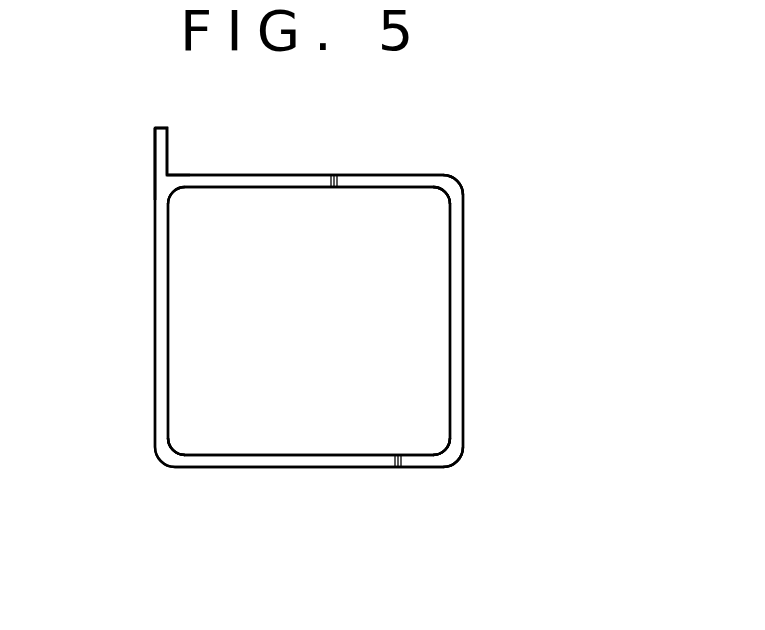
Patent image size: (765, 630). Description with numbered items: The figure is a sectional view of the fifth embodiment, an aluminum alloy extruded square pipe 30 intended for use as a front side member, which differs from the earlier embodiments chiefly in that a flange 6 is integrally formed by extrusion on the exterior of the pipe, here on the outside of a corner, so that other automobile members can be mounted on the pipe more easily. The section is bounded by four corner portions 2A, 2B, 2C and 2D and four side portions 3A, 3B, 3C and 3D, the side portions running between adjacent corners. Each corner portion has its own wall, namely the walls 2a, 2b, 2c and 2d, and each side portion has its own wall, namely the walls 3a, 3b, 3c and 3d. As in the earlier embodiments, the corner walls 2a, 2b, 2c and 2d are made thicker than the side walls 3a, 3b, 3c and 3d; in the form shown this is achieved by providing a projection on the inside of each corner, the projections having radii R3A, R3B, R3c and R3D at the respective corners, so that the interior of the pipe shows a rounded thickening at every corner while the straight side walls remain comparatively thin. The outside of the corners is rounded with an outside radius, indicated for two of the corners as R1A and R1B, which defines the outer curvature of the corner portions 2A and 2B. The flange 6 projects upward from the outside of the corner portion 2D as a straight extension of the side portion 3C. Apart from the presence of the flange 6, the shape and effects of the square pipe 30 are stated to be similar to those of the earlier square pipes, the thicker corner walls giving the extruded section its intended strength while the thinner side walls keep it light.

The square pipe 30 is at (534, 255).
The flange 6 is at (168, 150).
The corner portion 2D is at (146, 170).
The wall of corner portion 2d is at (172, 193).
The radius of projection R3D is at (185, 200).
The side portion 3D is at (284, 175).
The wall of side portion 3d is at (354, 187).
The outside radius of corner portion R1A is at (460, 173).
The corner portion 2A is at (474, 179).
The wall of corner portion 2a is at (455, 195).
The radius of projection R3A is at (432, 200).
The side portion 3A is at (463, 316).
The wall of side portion 3a is at (450, 372).
The side portion 3C is at (155, 378).
The wall of side portion 3c is at (168, 318).
The radius of projection R3c is at (185, 440).
The wall of corner portion 2c is at (175, 450).
The corner portion 2C is at (166, 478).
The side portion 3B is at (334, 468).
The wall of side portion 3b is at (258, 457).
The radius of projection R3B is at (440, 440).
The wall of corner portion 2b is at (446, 450).
The outside radius of corner portion R1B is at (458, 458).
The corner portion 2B is at (459, 475).